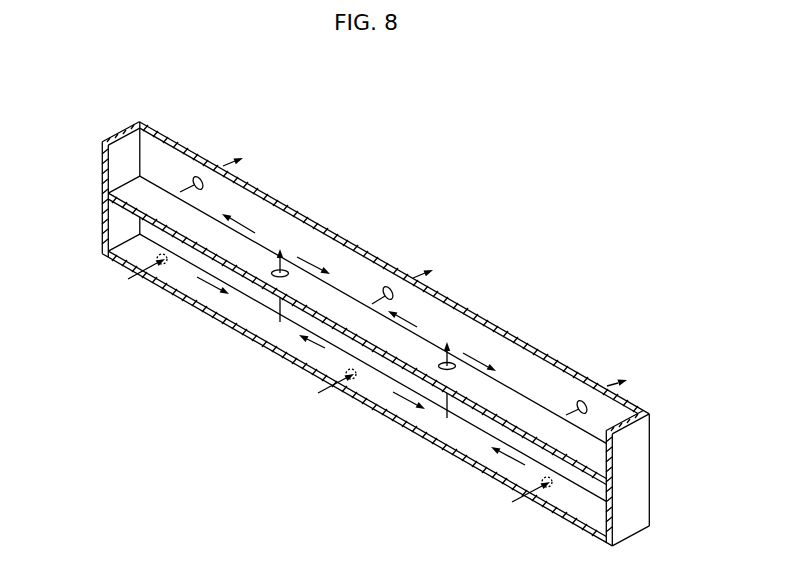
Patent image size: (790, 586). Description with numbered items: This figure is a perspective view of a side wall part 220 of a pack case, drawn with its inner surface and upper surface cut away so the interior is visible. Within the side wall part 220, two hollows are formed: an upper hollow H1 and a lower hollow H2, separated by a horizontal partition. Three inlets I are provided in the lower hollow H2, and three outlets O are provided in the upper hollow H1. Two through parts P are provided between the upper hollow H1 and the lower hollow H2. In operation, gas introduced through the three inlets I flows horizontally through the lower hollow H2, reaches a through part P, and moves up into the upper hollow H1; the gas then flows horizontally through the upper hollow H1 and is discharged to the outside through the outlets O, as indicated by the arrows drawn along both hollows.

The side wall part 220 is at (414, 193).
The upper hollow H1 is at (160, 162).
The lower hollow H2 is at (144, 249).
The outlet O is at (198, 181).
The through part P is at (287, 268).
The inlet I is at (160, 266).